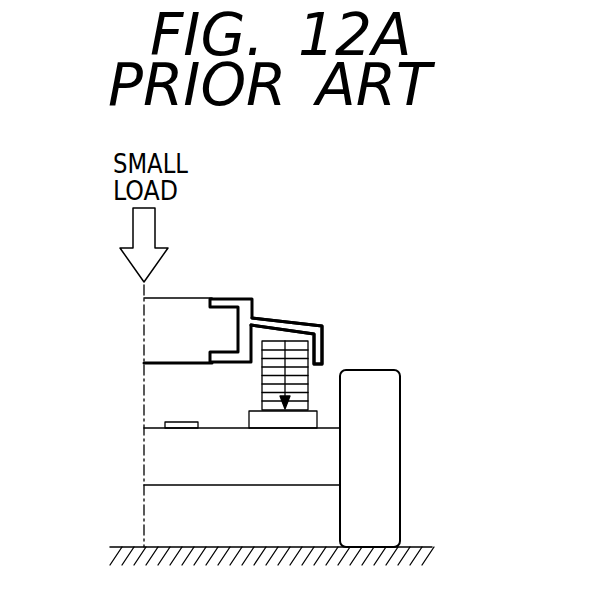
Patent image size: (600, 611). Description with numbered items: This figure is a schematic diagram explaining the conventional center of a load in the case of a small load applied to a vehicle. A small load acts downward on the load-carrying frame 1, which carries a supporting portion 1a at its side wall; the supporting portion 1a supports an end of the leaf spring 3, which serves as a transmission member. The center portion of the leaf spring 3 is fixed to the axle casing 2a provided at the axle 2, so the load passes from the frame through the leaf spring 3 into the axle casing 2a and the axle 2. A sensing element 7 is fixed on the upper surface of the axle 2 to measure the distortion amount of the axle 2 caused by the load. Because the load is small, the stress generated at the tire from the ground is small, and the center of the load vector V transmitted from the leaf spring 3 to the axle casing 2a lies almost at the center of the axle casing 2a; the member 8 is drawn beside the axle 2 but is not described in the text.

The load-carrying frame 1 is at (229, 297).
The supporting portion 1a is at (313, 324).
The axle 2 is at (157, 467).
The axle casing 2a is at (317, 418).
The leaf spring 3 is at (260, 390).
The sensing element 7 is at (177, 421).
The stopper block 8 is at (414, 463).
The load vector V is at (308, 368).